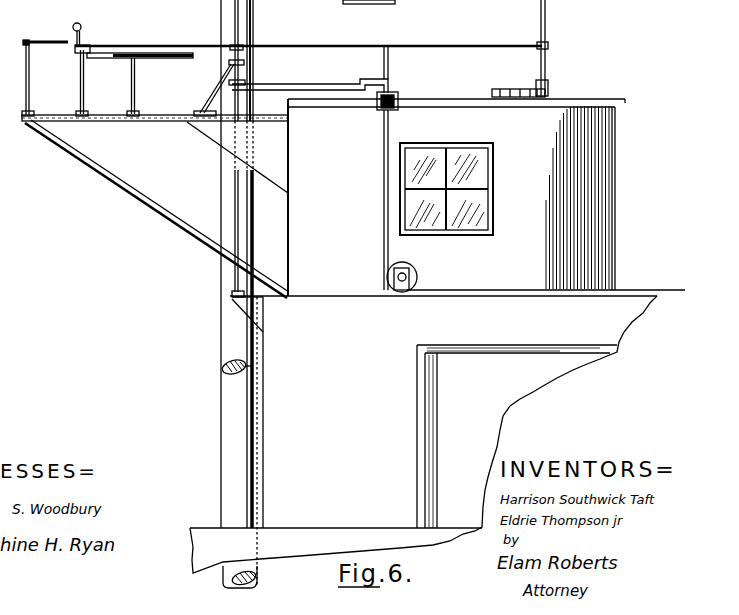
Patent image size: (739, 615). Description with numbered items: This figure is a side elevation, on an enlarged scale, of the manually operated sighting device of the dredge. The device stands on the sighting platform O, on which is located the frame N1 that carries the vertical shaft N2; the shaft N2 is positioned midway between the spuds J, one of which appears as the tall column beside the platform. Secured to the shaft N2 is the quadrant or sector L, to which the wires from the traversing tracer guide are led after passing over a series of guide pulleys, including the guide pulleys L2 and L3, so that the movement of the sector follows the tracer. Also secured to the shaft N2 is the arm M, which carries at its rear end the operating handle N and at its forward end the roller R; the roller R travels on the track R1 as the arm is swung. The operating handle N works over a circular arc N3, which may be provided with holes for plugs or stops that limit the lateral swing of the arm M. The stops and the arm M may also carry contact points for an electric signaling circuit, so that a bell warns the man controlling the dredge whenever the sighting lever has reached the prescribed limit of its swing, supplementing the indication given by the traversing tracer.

The operating handle N is at (78, 22).
The frame N1 is at (230, 67).
The vertical shaft N2 is at (235, 195).
The circular arc N3 is at (78, 58).
The arm M is at (163, 46).
The sighting platform O is at (130, 121).
The quadrant or sector L is at (364, 83).
The guide pulley L2 is at (394, 93).
The guide pulley L3 is at (414, 275).
The roller R is at (547, 84).
The track R1 is at (504, 91).
The spud J is at (221, 303).